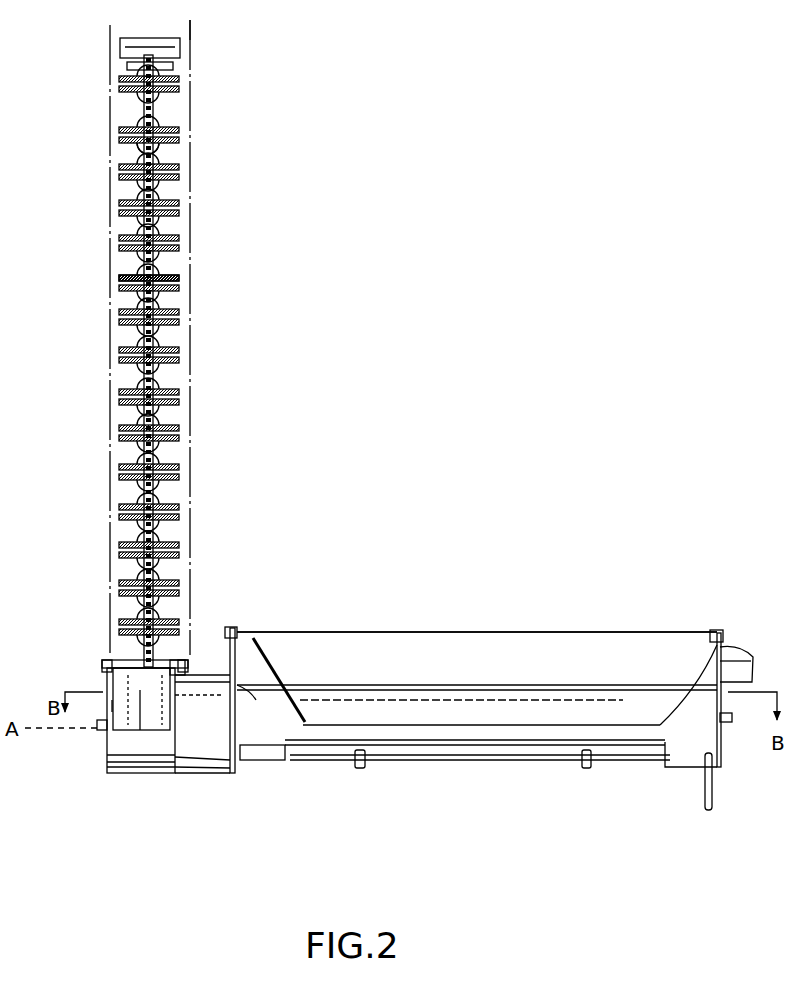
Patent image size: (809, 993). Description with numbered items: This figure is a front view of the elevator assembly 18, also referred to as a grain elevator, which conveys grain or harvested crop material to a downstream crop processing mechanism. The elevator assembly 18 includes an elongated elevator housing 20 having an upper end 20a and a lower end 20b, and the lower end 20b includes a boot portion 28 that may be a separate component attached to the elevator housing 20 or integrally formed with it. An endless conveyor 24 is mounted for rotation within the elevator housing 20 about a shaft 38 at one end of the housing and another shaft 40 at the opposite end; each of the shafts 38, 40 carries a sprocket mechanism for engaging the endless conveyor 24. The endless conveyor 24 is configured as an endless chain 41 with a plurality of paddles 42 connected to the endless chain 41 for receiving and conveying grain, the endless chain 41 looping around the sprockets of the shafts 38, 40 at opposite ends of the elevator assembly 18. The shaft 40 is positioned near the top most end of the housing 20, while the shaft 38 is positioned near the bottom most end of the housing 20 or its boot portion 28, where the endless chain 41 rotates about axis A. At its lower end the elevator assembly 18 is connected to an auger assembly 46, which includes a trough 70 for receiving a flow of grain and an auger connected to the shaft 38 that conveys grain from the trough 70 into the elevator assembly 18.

The elevator assembly 18 is at (88, 387).
The elevator housing 20 is at (190, 127).
The upper end 20a is at (190, 33).
The lower end 20b is at (112, 705).
The endless conveyor 24 is at (127, 185).
The boot portion 28 is at (138, 772).
The shaft 38 is at (97, 725).
The shaft 40 is at (125, 68).
The endless chain 41 is at (157, 150).
The paddles 42 is at (117, 275).
The auger assembly 46 is at (640, 620).
The trough 70 is at (443, 630).